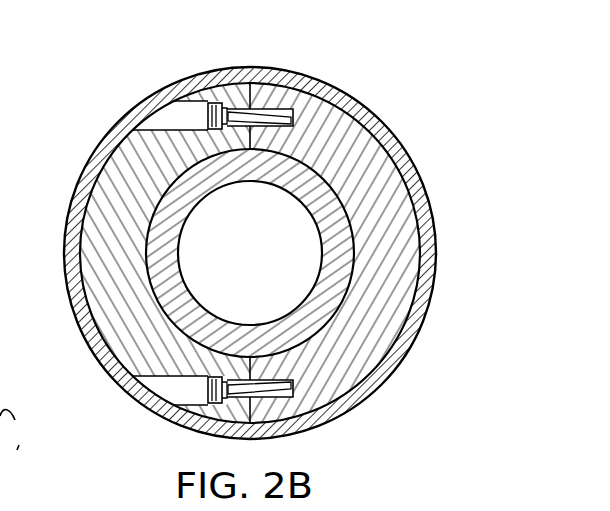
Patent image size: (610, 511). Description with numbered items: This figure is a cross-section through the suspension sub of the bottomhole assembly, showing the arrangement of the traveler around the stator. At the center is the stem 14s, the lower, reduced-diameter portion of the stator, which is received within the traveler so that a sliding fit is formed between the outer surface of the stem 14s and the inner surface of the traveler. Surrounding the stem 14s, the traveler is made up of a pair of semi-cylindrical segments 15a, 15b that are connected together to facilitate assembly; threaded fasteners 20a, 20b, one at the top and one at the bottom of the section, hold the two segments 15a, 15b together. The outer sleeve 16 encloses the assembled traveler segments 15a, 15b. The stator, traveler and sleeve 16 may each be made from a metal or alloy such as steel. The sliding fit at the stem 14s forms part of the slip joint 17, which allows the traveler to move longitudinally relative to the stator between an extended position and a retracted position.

The stem 14s is at (290, 195).
The semi-cylindrical segment 15a is at (123, 173).
The semi-cylindrical segment 15b is at (350, 146).
The outer sleeve 16 is at (85, 343).
The slip joint 17 is at (15, 430).
The threaded fastener 20a is at (223, 103).
The threaded fastener 20b is at (277, 395).